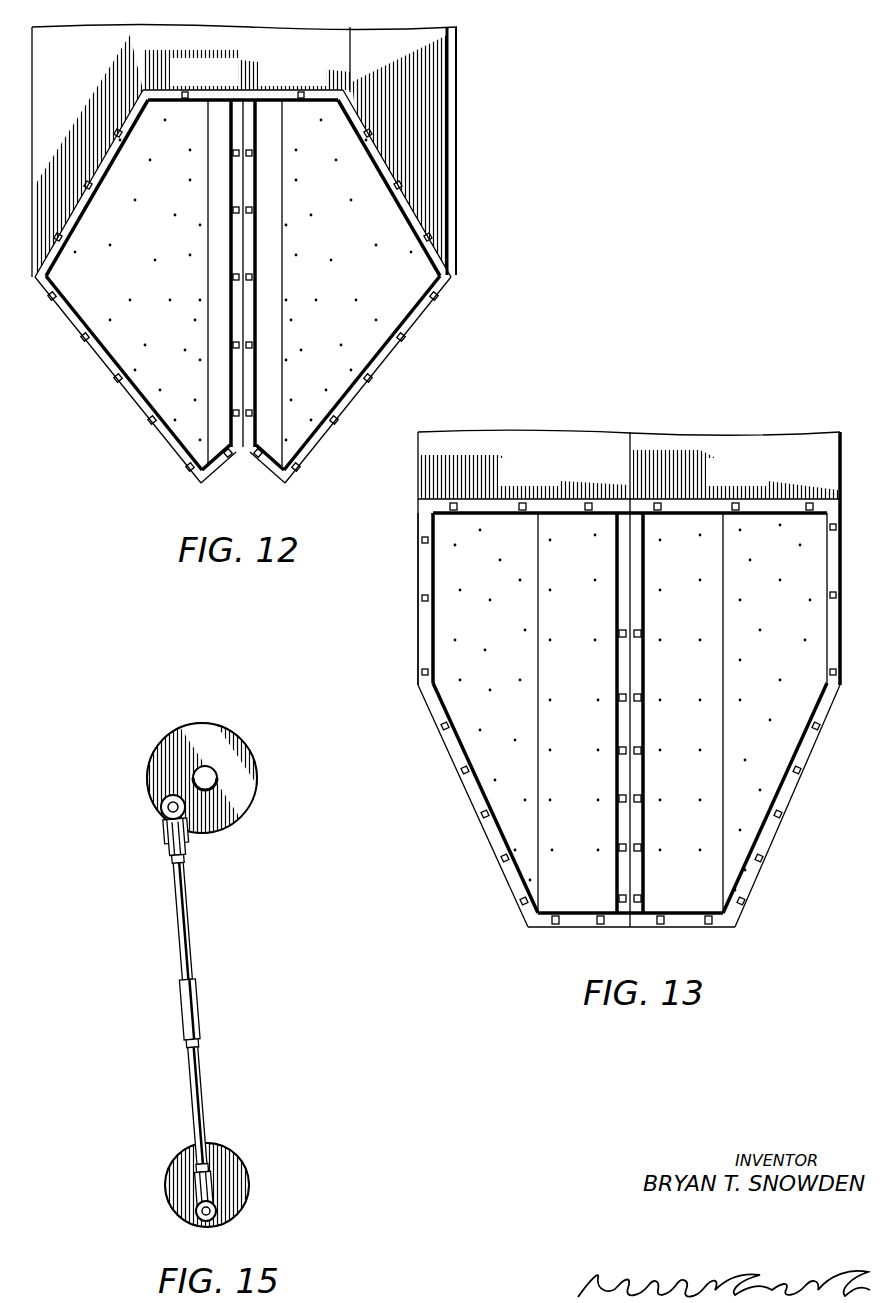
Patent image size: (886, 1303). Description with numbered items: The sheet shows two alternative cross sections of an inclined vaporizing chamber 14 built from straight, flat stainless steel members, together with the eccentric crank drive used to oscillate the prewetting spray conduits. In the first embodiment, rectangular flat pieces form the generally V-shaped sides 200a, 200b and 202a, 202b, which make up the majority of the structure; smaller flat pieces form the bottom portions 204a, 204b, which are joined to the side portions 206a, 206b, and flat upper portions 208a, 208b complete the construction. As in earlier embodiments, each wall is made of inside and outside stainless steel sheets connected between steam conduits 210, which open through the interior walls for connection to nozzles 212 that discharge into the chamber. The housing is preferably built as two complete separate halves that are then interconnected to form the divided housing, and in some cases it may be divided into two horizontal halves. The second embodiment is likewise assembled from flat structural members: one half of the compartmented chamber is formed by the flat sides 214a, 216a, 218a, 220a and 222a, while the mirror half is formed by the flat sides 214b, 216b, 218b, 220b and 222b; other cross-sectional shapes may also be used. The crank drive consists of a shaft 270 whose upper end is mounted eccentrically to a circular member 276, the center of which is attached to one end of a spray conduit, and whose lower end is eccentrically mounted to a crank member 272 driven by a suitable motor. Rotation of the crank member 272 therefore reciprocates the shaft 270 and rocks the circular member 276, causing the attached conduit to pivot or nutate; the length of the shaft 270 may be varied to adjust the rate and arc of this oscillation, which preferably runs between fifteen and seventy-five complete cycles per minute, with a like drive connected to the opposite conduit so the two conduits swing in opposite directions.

In FIG. 12, the hopper bin 14 is at (480, 146).
In FIG. 13, the hopper bin 14 is at (706, 428).
In FIG. 12, the V-shaped side 200a is at (394, 183).
In FIG. 12, the V-shaped side 200b is at (91, 183).
In FIG. 12, the V-shaped side 202a is at (376, 362).
In FIG. 12, the V-shaped side 202b is at (107, 362).
In FIG. 12, the bottom portion 204a is at (261, 478).
In FIG. 12, the bottom portion 204b is at (225, 478).
In FIG. 12, the side portion 206a is at (258, 232).
In FIG. 12, the side portion 206b is at (230, 232).
In FIG. 12, the flat upper portion 208a is at (293, 82).
In FIG. 12, the flat upper portion 208b is at (193, 82).
In FIG. 12, the steam conduit 210 is at (185, 98).
In FIG. 12, the nozzle 212 is at (170, 253).
In FIG. 13, the flat side 214a is at (735, 488).
In FIG. 13, the flat side 214b is at (524, 488).
In FIG. 13, the flat side 216a is at (827, 618).
In FIG. 13, the flat side 216b is at (418, 605).
In FIG. 13, the flat side 218a is at (777, 812).
In FIG. 13, the flat side 218b is at (486, 814).
In FIG. 13, the flat side 220a is at (705, 930).
In FIG. 13, the flat side 220b is at (615, 930).
In FIG. 13, the flat side 222a is at (646, 634).
In FIG. 13, the flat side 222b is at (617, 636).
In FIG. 15, the shaft 270 is at (200, 985).
In FIG. 15, the crank member 272 is at (250, 1200).
In FIG. 15, the circular member 276 is at (248, 768).